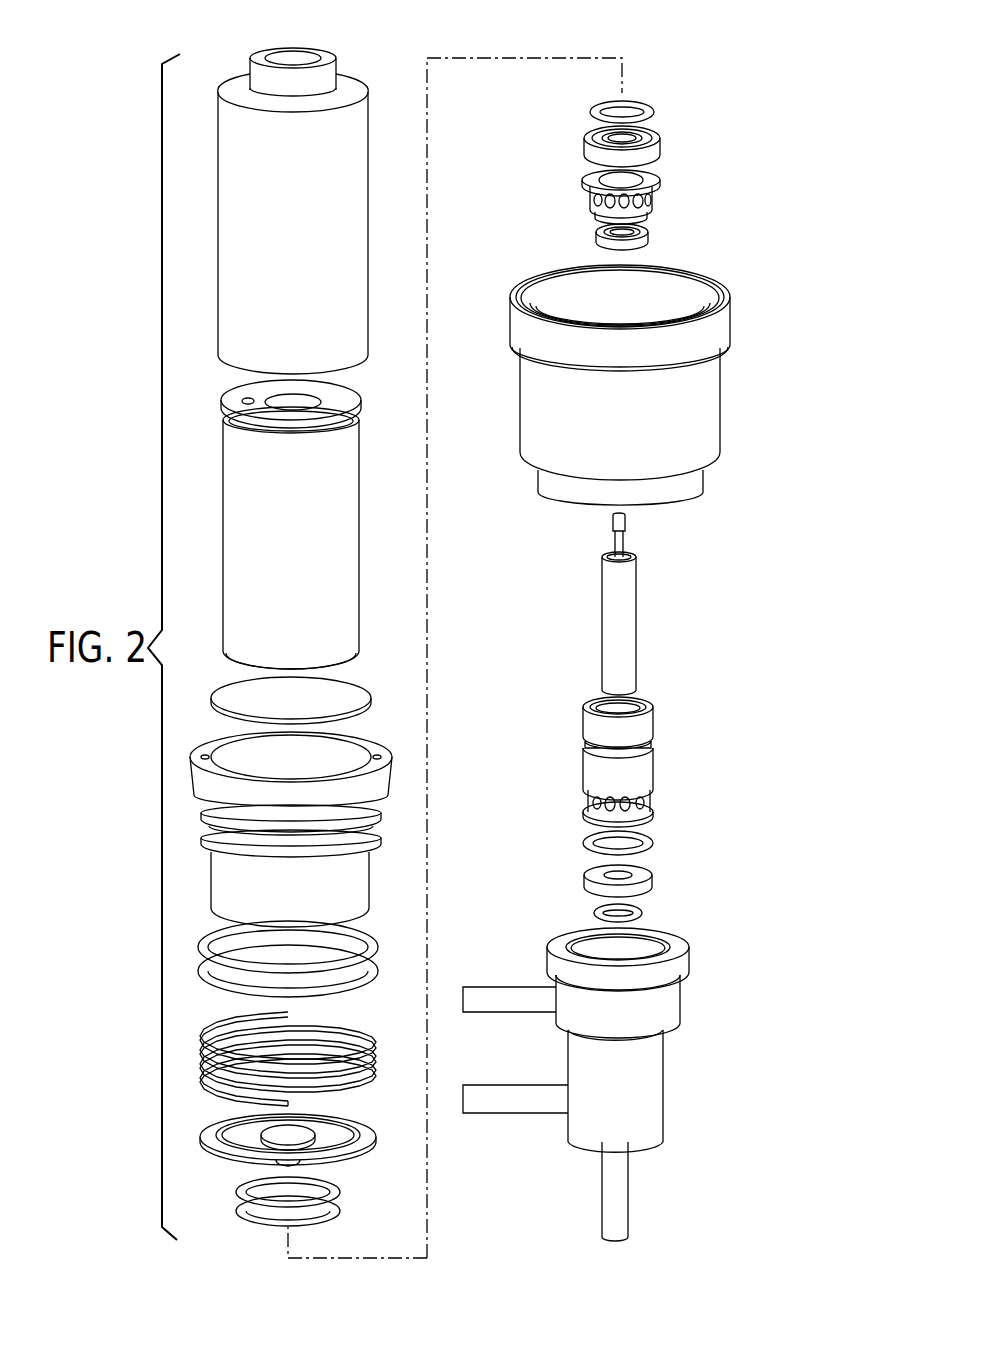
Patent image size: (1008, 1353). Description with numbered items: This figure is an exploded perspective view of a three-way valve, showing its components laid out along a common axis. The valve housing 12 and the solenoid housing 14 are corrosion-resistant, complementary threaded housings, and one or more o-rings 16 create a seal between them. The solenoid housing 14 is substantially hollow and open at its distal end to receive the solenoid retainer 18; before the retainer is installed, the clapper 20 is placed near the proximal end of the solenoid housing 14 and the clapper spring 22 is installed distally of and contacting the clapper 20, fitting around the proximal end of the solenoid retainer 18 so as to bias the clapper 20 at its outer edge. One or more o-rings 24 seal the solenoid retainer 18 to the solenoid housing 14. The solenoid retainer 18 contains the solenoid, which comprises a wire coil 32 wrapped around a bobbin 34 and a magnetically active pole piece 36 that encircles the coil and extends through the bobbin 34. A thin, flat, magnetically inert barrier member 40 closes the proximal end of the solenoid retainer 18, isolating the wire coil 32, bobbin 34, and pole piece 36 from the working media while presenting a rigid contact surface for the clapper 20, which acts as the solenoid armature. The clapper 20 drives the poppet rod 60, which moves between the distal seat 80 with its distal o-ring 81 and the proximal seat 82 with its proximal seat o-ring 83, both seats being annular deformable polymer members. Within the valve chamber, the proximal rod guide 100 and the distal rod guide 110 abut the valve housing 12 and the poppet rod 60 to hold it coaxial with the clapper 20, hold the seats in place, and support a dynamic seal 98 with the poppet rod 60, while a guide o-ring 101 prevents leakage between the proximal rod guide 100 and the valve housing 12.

The valve housing 12 is at (666, 1082).
The solenoid housing 14 is at (724, 400).
The o-rings 16 is at (237, 1213).
The solenoid retainer 18 is at (372, 872).
The clapper 20 is at (377, 1142).
The clapper spring 22 is at (377, 1062).
The o-rings 24 is at (377, 940).
The wire coil 32 is at (360, 532).
The bobbin 34 is at (363, 402).
The pole piece 36 is at (350, 233).
The barrier member 40 is at (367, 703).
The poppet rod 60 is at (637, 623).
The distal seat 80 is at (660, 142).
The distal o-ring 81 is at (655, 110).
The proximal seat 82 is at (655, 878).
The proximal seat o-ring 83 is at (645, 912).
The dynamic seal 98 is at (650, 236).
The proximal rod guide 100 is at (655, 722).
The guide o-ring 101 is at (655, 840).
The distal rod guide 110 is at (660, 180).